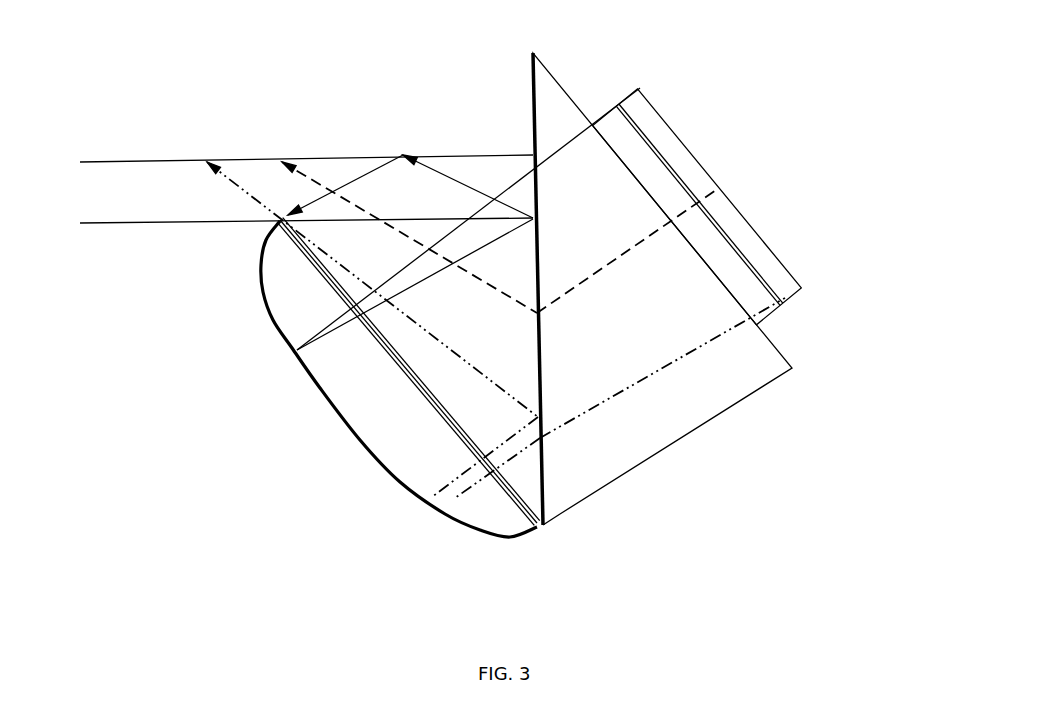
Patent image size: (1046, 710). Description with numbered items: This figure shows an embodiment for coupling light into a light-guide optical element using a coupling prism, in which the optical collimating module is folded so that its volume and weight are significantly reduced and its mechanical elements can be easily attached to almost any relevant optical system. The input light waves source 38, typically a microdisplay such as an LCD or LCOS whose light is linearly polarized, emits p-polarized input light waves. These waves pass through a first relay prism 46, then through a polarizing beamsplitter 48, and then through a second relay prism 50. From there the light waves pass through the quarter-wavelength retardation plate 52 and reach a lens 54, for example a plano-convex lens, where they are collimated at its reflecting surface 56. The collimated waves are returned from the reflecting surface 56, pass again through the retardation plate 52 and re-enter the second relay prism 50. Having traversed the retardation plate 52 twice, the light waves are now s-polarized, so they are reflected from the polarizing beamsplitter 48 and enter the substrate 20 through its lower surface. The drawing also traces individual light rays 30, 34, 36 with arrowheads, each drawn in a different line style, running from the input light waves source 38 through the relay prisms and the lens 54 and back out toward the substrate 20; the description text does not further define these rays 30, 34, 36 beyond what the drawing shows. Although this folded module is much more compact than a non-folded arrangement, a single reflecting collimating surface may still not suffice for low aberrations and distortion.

The substrate 20 is at (138, 192).
The first reflected light ray 30 is at (313, 176).
The second light ray 34 is at (453, 178).
The third light ray 36 is at (245, 188).
The input light waves source 38 is at (752, 218).
The first relay prism 46 is at (713, 390).
The polarizing beamsplitter 48 is at (540, 377).
The second relay prism 50 is at (496, 412).
The quarter-wavelength retardation plate 52 is at (548, 528).
The lens 54 is at (394, 379).
The reflecting surface 56 is at (343, 426).